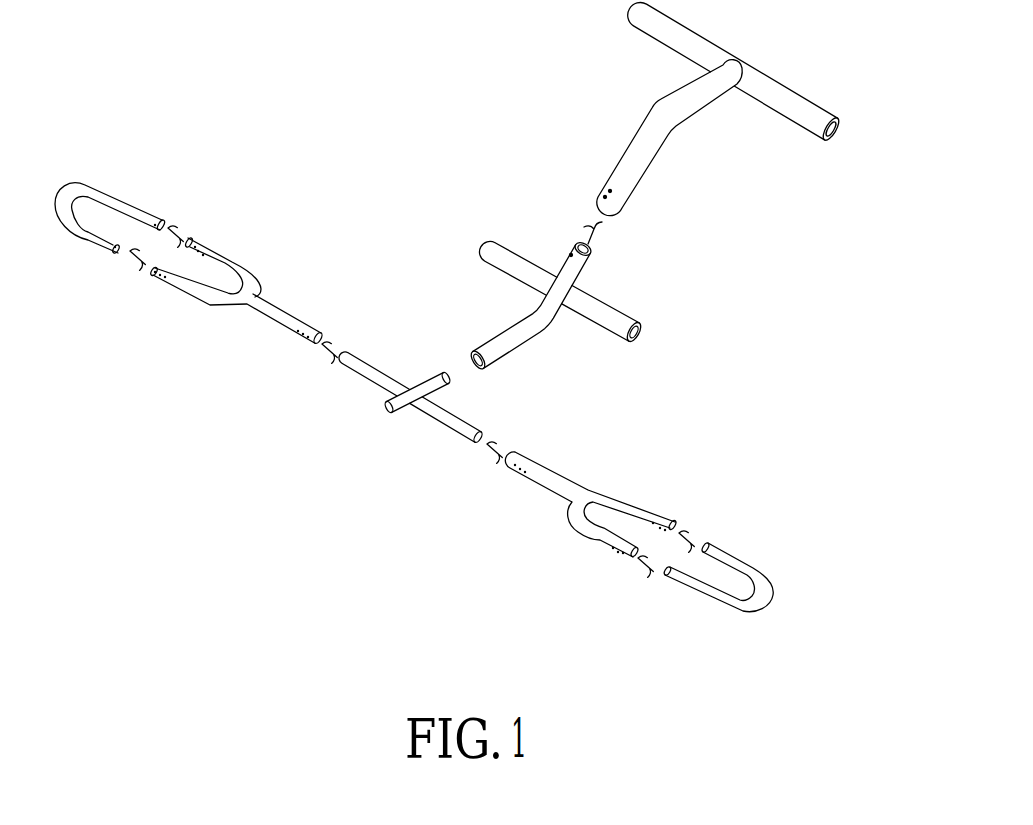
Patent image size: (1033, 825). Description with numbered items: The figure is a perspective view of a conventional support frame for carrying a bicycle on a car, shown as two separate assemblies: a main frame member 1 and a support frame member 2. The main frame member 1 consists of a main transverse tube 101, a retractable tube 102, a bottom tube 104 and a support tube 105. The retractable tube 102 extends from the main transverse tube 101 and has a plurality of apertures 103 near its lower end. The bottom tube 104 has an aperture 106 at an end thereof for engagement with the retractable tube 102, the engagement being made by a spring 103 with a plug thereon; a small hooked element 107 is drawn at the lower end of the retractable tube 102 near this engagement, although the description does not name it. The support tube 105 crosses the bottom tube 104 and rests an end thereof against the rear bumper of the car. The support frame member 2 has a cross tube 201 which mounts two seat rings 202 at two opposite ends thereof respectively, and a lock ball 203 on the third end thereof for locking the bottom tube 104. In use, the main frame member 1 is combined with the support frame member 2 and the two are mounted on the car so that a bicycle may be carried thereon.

The main frame member 1 is at (617, 130).
The main transverse tube 101 is at (795, 107).
The retractable tube 102 is at (683, 107).
The apertures 103 is at (613, 183).
The bottom tube 104 is at (515, 343).
The support tube 105 is at (598, 315).
The aperture 106 is at (570, 254).
The retaining hook 107 is at (603, 229).
The support frame member 2 is at (340, 285).
The cross tube 201 is at (425, 387).
The seat rings 202 is at (125, 203).
The lock ball 203 is at (437, 373).